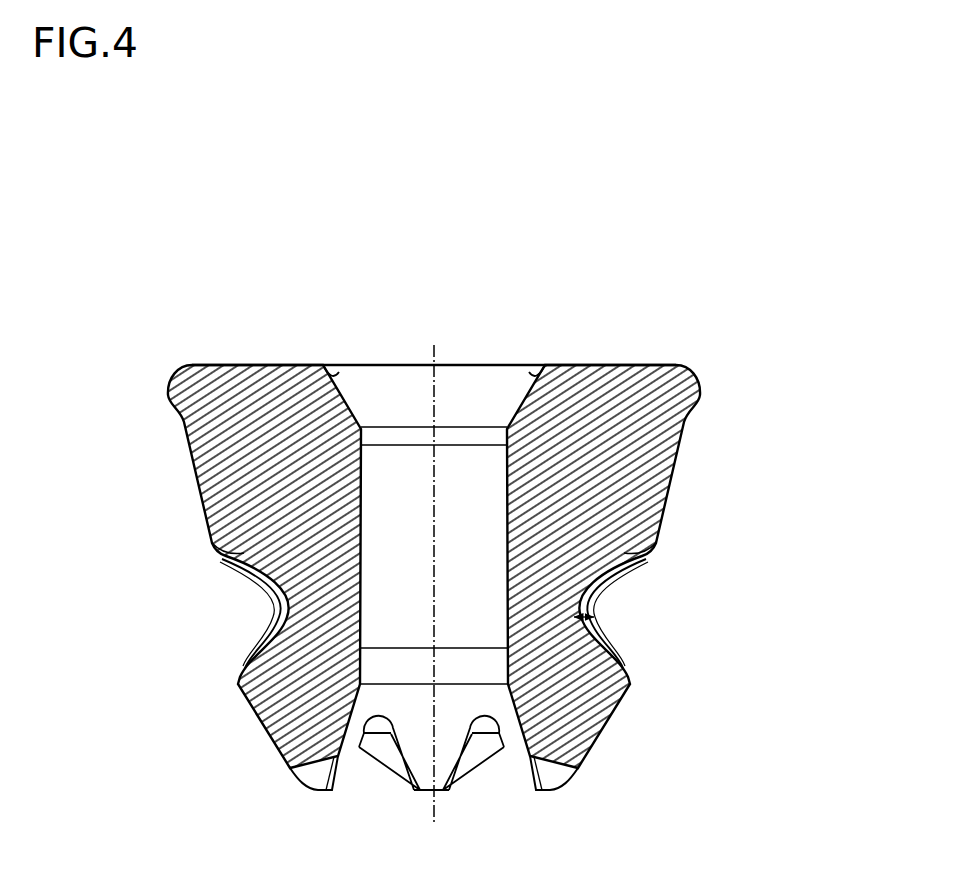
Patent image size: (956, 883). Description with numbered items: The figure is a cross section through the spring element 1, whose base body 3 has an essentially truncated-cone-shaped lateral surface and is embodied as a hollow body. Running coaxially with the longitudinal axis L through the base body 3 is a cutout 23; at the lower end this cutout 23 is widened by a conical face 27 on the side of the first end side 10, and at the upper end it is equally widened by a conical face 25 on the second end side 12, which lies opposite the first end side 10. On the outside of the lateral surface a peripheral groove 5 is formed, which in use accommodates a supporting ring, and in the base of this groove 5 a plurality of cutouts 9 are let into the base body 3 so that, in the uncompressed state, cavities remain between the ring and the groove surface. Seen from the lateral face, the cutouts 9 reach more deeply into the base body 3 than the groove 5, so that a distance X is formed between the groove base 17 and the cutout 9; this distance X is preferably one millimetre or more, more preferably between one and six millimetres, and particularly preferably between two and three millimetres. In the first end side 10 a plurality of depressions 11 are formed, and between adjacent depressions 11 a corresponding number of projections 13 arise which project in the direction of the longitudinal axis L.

The spring element 1 is at (206, 315).
The base body 3 is at (191, 465).
The peripheral groove 5 is at (631, 617).
The cutouts 9 is at (236, 556).
The first end side 10 is at (518, 820).
The depressions 11 is at (483, 755).
The second end side 12 is at (366, 322).
The projections 13 is at (452, 794).
The groove base 17 is at (265, 615).
The cutout 23 is at (467, 462).
The conical face 25 is at (333, 368).
The conical face 27 is at (340, 746).
The longitudinal axis L is at (433, 820).
The distance X is at (612, 620).